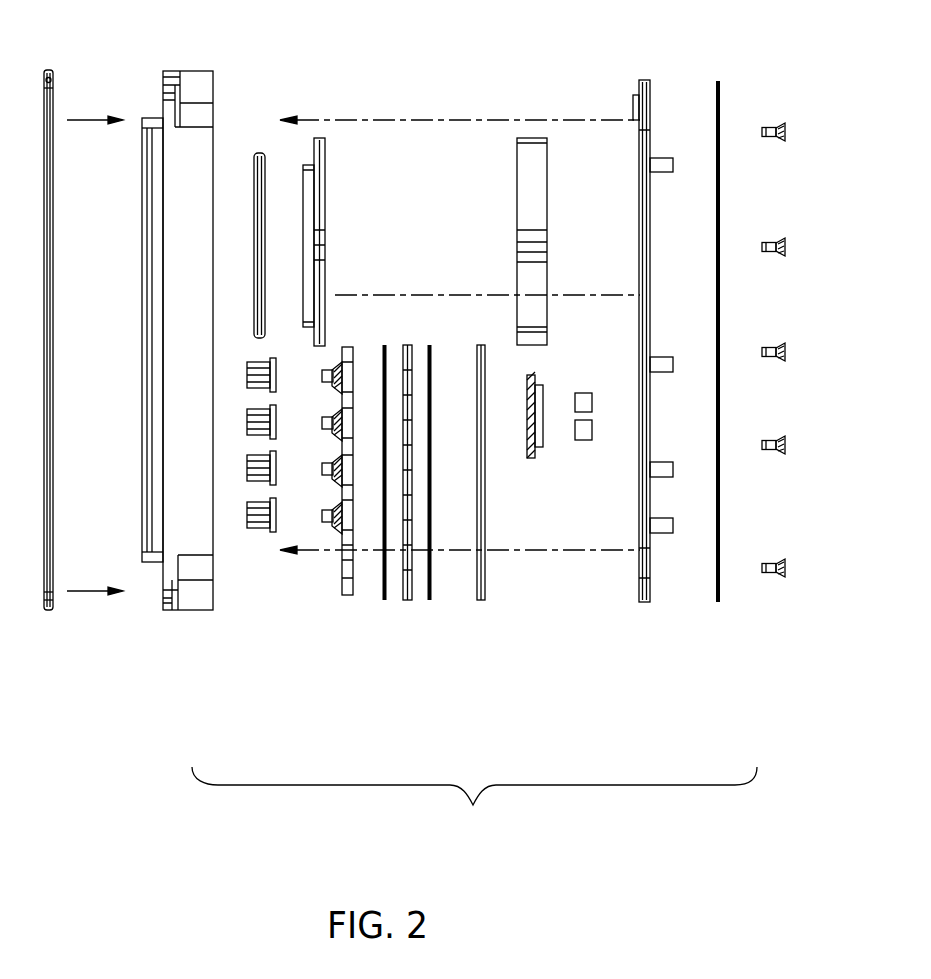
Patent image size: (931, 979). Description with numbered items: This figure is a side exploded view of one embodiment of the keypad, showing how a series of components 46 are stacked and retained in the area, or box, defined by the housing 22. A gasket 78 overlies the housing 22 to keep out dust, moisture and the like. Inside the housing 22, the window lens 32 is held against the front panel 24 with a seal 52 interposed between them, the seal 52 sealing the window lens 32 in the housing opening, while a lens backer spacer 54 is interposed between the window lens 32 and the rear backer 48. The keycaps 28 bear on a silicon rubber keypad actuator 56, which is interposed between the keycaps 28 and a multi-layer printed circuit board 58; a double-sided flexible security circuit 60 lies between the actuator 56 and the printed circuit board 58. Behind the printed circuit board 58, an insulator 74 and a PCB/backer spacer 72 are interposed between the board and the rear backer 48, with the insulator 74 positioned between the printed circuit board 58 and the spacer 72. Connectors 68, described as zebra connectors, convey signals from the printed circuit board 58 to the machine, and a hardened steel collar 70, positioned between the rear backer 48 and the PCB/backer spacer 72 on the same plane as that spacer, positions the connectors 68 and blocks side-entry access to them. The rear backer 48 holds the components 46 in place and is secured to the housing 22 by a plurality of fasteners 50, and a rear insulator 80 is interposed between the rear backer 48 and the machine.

The housing 22 is at (199, 71).
The front panel 24 is at (143, 305).
The keycaps 28 is at (258, 531).
The window lens 32 is at (319, 138).
The components 46 is at (473, 805).
The rear backer 48 is at (641, 603).
The fasteners 50 is at (781, 578).
The seal 52 is at (259, 152).
The lens backer spacer 54 is at (532, 138).
The silicon rubber keypad actuator 56 is at (348, 596).
The multi-layer printed circuit board 58 is at (407, 601).
The double-sided flexible security circuit 60 is at (384, 601).
The connectors 68 is at (582, 441).
The hardened steel collar 70 is at (531, 459).
The PCB/backer spacer 72 is at (481, 601).
The insulator 74 is at (430, 601).
The gasket 78 is at (49, 68).
The rear insulator 80 is at (718, 603).